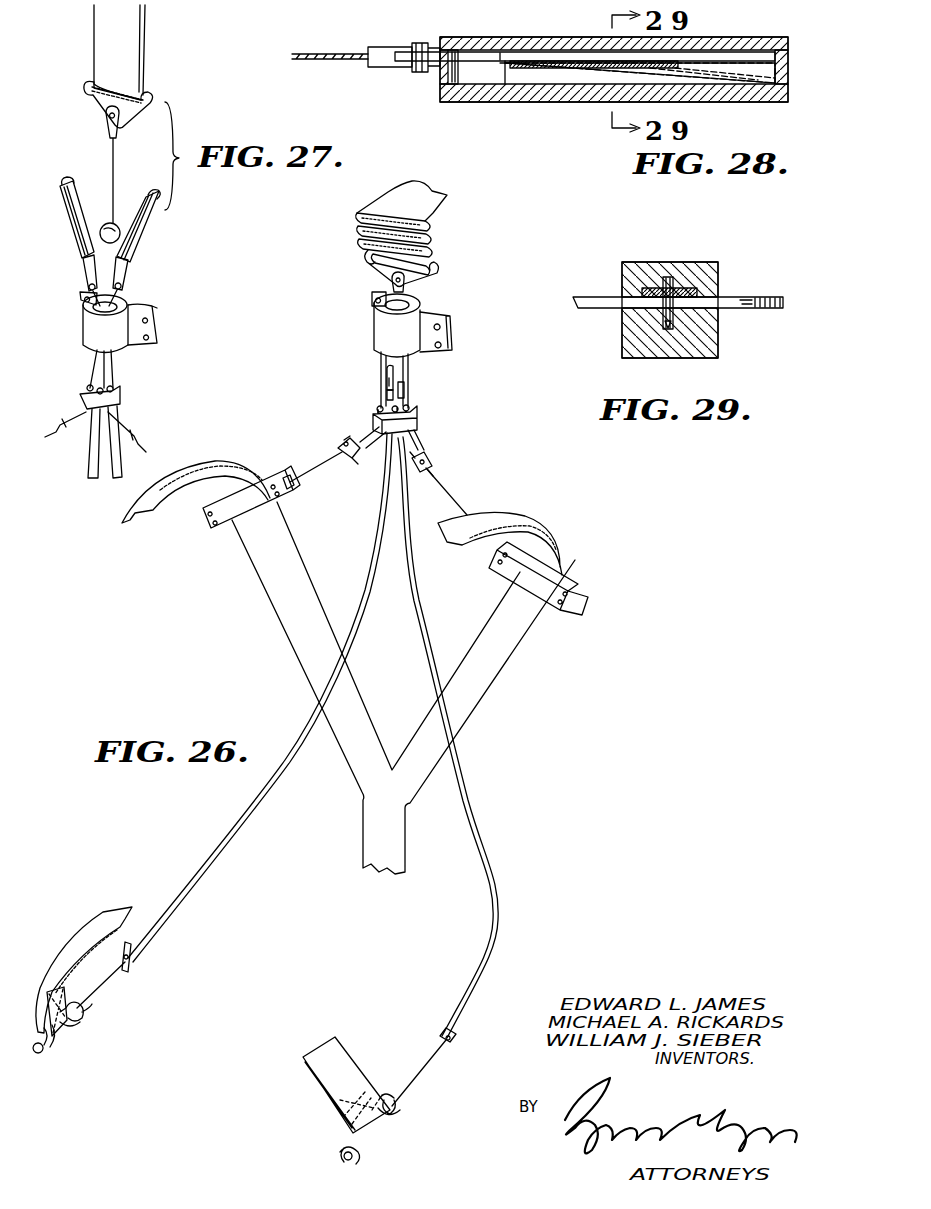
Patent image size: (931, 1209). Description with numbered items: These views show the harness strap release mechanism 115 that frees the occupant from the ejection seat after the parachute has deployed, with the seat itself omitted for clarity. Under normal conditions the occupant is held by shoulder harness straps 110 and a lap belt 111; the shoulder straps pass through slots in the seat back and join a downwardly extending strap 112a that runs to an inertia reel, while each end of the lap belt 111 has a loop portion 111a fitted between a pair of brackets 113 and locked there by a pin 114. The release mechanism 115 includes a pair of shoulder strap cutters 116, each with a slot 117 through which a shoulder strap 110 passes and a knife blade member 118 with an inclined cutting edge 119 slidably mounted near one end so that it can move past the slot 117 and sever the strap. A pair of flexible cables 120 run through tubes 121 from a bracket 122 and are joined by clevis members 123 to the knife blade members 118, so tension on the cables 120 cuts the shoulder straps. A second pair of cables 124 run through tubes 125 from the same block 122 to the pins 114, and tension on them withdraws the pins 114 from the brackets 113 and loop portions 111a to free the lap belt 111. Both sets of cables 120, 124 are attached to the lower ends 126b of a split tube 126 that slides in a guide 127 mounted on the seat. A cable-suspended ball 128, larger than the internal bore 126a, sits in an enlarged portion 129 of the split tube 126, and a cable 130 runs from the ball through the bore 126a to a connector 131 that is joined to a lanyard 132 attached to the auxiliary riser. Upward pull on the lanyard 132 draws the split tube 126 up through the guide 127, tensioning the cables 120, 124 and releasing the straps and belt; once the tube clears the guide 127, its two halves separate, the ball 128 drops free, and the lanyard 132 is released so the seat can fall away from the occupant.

In FIG. 28, the shoulder harness straps 110 is at (592, 45).
In FIG. 26, the shoulder harness straps 110 is at (525, 525).
In FIG. 26, the lap belt 111 is at (332, 1037).
In FIG. 26, the loop portion 111a is at (373, 1130).
In FIG. 26, the downwardly extending strap 112a is at (375, 874).
In FIG. 26, the brackets 113 is at (398, 1112).
In FIG. 26, the pin 114 is at (343, 1154).
In FIG. 27, the harness strap release mechanism 115 is at (78, 333).
In FIG. 26, the harness strap release mechanism 115 is at (361, 320).
In FIG. 28, the shoulder strap cutters 116 is at (492, 103).
In FIG. 29, the shoulder strap cutters 116 is at (678, 296).
In FIG. 26, the shoulder strap cutters 116 is at (580, 597).
In FIG. 28, the slot 117 is at (583, 92).
In FIG. 29, the slot 117 is at (626, 297).
In FIG. 28, the knife blade member 118 is at (758, 92).
In FIG. 29, the knife blade member 118 is at (675, 272).
In FIG. 28, the inclined cutting edge 119 is at (714, 90).
In FIG. 29, the inclined cutting edge 119 is at (660, 324).
In FIG. 28, the flexible cables 120 is at (308, 52).
In FIG. 26, the flexible cables 120 is at (465, 505).
In FIG. 26, the tubes 121 is at (376, 448).
In FIG. 26, the bracket 122 is at (420, 422).
In FIG. 28, the clevis members 123 is at (398, 65).
In FIG. 26, the clevis members 123 is at (292, 492).
In FIG. 26, the cables 124 is at (425, 1060).
In FIG. 26, the tubes 125 is at (500, 920).
In FIG. 27, the split tube 126 is at (140, 238).
In FIG. 26, the split tube 126 is at (380, 366).
In FIG. 27, the internal bore 126a is at (155, 190).
In FIG. 26, the internal bore 126a is at (406, 290).
In FIG. 26, the lower ends 126b is at (406, 392).
In FIG. 27, the guide 127 is at (140, 305).
In FIG. 26, the guide 127 is at (428, 312).
In FIG. 27, the ball 128 is at (116, 224).
In FIG. 26, the ball 128 is at (386, 380).
In FIG. 27, the enlarged portion 129 is at (124, 272).
In FIG. 27, the cable 130 is at (113, 158).
In FIG. 27, the connector 131 is at (84, 86).
In FIG. 26, the connector 131 is at (370, 265).
In FIG. 27, the lanyard 132 is at (100, 42).
In FIG. 26, the lanyard 132 is at (432, 190).